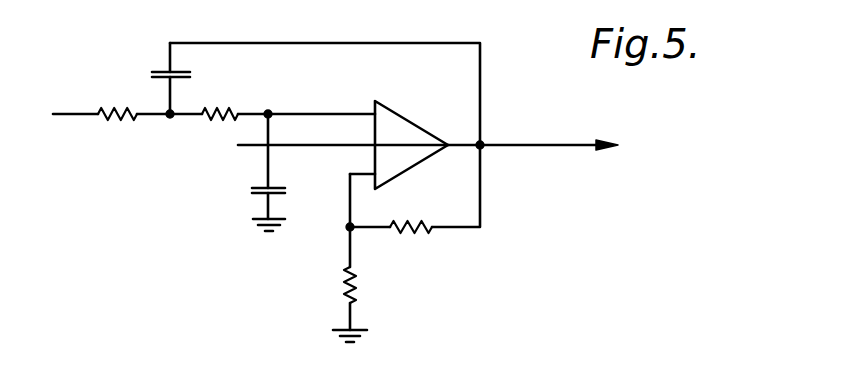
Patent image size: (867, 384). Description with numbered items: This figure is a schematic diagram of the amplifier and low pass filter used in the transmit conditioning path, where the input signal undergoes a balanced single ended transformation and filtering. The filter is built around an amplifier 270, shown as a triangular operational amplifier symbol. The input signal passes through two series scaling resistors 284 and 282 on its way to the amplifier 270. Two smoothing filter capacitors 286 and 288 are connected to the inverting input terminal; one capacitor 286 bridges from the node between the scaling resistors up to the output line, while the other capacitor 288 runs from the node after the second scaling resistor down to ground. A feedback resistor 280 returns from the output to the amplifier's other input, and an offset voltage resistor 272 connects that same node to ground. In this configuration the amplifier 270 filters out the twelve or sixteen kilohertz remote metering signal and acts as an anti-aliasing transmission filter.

The amplifier 270 is at (407, 112).
The offset voltage resistor 272 is at (345, 278).
The feedback resistor 280 is at (413, 232).
The scaling resistor 282 is at (232, 112).
The scaling resistor 284 is at (117, 109).
The smoothing filter capacitor 286 is at (160, 71).
The smoothing filter capacitor 288 is at (252, 190).